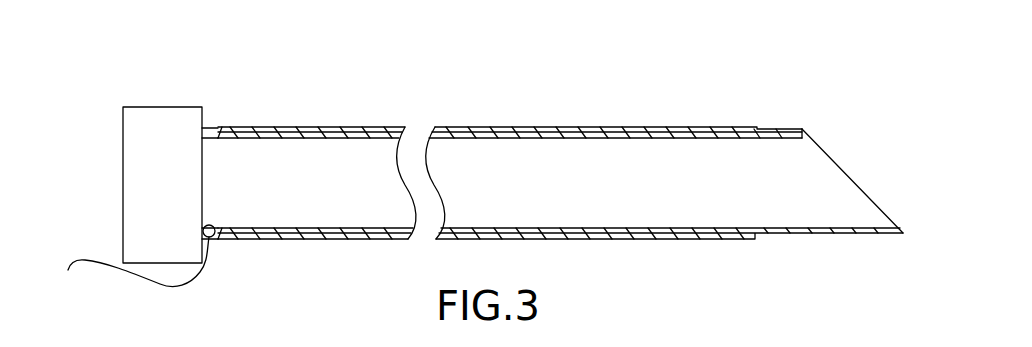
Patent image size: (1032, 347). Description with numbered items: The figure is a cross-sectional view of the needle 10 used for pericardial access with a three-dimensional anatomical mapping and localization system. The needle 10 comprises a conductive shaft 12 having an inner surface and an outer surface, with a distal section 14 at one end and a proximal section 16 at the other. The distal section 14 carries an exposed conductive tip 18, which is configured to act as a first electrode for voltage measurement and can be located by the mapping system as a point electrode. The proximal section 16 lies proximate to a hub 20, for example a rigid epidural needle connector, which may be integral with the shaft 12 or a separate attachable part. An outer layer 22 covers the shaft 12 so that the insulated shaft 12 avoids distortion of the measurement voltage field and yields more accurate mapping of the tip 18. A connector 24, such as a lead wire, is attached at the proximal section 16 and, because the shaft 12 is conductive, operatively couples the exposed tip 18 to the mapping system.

The needle 10 is at (560, 120).
The shaft 12 is at (765, 127).
The distal section 14 is at (782, 128).
The proximal section 16 is at (211, 128).
The conductive tip 18 is at (845, 172).
The hub 20 is at (128, 178).
The outer layer 22 is at (697, 127).
The connector 24 is at (121, 269).